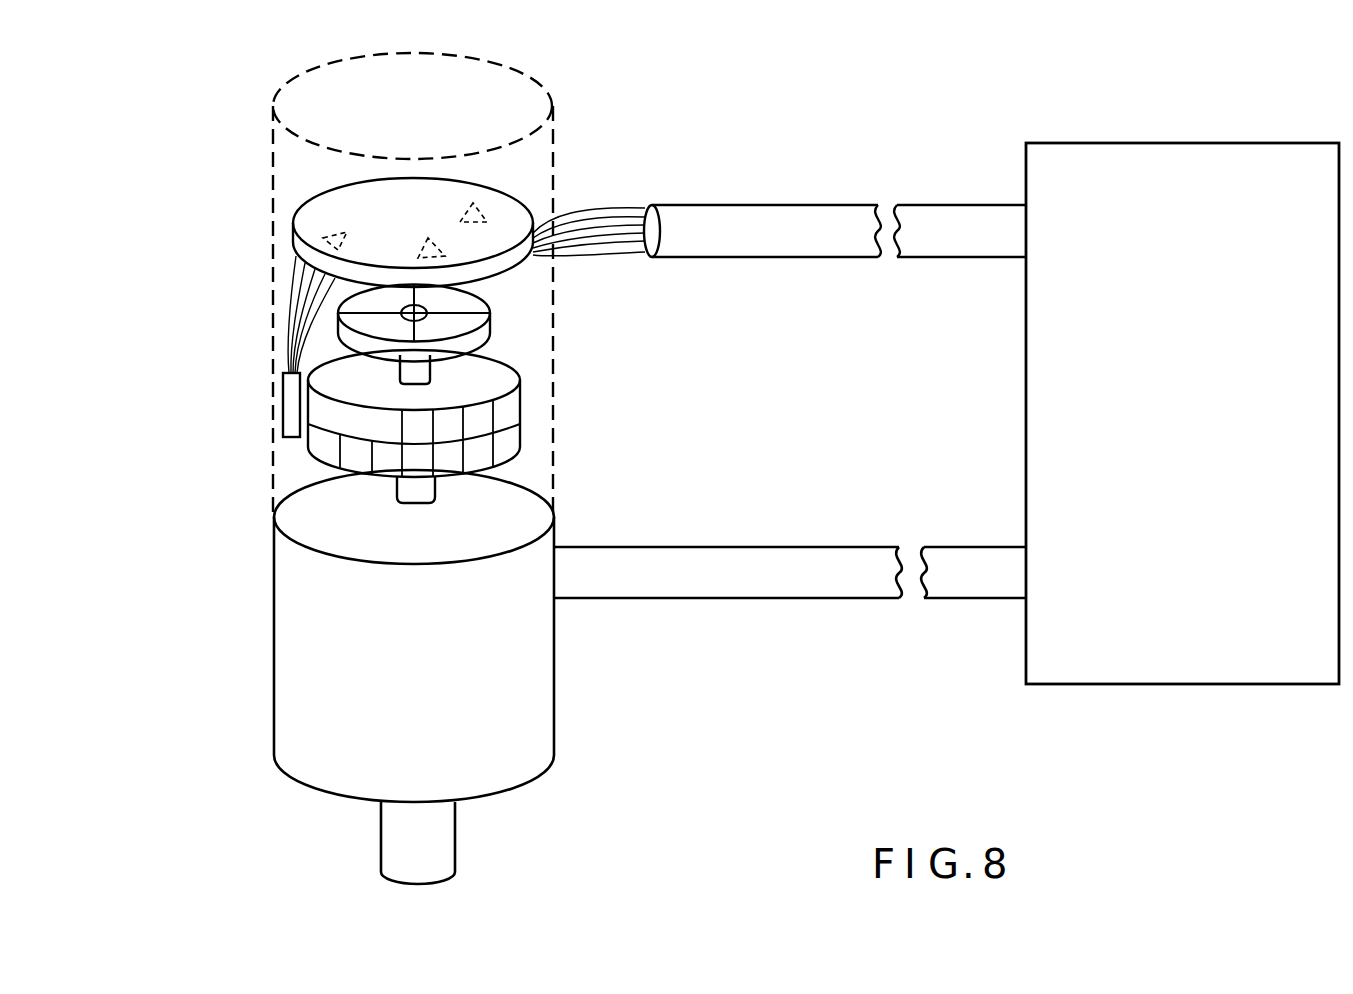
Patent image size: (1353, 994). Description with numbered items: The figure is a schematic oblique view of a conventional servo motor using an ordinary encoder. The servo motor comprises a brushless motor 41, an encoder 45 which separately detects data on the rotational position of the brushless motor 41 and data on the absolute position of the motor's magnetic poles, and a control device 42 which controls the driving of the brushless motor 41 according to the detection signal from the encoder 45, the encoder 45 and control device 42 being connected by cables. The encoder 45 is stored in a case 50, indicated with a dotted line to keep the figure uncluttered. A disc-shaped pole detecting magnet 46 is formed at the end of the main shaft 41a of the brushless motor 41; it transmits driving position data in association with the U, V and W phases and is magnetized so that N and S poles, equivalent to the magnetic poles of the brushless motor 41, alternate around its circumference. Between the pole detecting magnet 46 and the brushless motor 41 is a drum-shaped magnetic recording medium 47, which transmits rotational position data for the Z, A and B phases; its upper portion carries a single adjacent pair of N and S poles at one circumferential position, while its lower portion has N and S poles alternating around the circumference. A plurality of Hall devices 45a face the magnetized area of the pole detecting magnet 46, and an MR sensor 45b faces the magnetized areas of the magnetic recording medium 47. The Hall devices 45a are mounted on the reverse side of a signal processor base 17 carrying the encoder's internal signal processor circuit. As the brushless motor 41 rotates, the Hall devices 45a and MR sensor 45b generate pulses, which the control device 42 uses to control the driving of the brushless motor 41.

The signal processor base 17 is at (528, 278).
The brushless motor 41 is at (272, 641).
The main shaft 41a is at (383, 484).
The control device 42 is at (1157, 143).
The encoder 45 is at (256, 200).
The Hall devices 45a is at (323, 238).
The MR sensor 45b is at (283, 403).
The pole detecting magnet 46 is at (490, 333).
The magnetic recording medium 47 is at (520, 420).
The case 50 is at (510, 72).